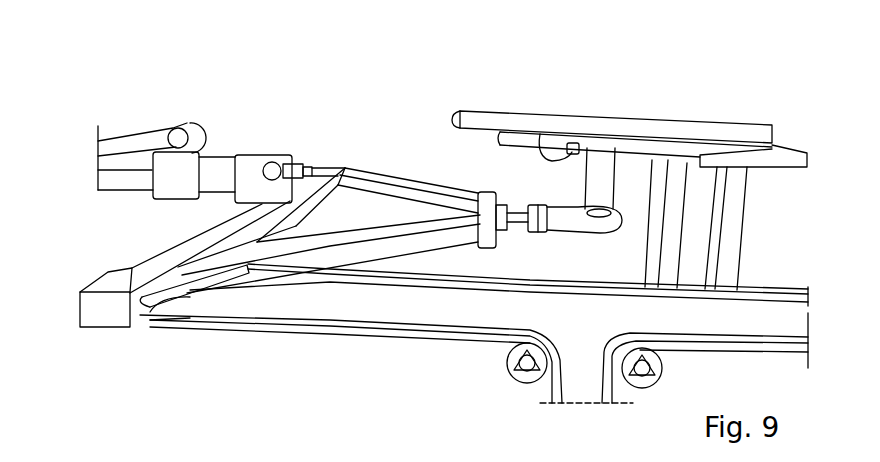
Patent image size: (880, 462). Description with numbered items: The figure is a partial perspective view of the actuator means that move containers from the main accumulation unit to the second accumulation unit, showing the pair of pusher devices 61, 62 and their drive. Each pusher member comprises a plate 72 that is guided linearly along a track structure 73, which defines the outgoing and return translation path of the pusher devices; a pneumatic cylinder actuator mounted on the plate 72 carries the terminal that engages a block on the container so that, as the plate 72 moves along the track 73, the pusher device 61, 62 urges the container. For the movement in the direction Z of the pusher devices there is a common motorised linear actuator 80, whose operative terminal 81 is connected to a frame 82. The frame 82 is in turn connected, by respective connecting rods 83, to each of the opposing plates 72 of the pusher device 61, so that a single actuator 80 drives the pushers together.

The pusher device 61 is at (243, 148).
The pusher device 62 is at (146, 190).
The plate 72 is at (254, 160).
The track structure 73 is at (108, 183).
The motorised linear actuator 80 is at (540, 134).
The operative terminal 81 is at (617, 196).
The frame 82 is at (418, 178).
The connecting rod 83 is at (290, 162).